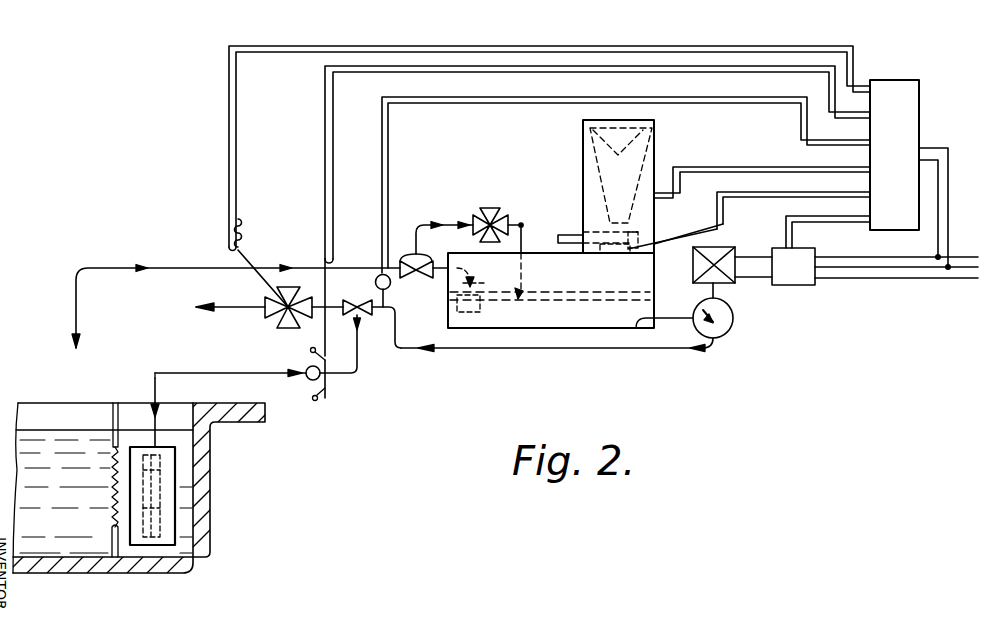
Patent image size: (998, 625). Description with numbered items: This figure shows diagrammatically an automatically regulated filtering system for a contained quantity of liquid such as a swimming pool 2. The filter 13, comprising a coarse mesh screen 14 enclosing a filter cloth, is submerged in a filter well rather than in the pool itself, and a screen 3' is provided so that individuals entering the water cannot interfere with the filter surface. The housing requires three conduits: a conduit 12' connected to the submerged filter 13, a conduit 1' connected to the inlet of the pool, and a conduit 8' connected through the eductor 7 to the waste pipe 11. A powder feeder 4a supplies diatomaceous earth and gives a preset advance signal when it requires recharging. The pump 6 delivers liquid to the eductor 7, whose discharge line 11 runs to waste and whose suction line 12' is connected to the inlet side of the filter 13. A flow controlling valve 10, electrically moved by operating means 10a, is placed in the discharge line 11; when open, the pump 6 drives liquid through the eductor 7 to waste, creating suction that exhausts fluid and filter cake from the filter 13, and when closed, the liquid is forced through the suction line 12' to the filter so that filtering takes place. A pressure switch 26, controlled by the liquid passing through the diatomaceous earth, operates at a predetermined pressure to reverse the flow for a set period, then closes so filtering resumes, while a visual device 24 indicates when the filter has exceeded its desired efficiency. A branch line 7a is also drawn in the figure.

The conduit 1' is at (297, 278).
The swimming pool 2 is at (182, 527).
The screen 3' is at (93, 480).
The powder feeder 4a is at (652, 143).
The pump 6 is at (720, 338).
The eductor 7 is at (354, 301).
The branch conduit 7a is at (371, 313).
The conduit 8' is at (557, 369).
The control valve 10 is at (283, 329).
The operating means 10a is at (243, 243).
The waste pipe 11 is at (241, 301).
The conduit 12' is at (364, 356).
The filter 13 is at (167, 502).
The coarse mesh screen 14 is at (175, 473).
The visual device 24 is at (309, 385).
The pressure switch 26 is at (389, 287).